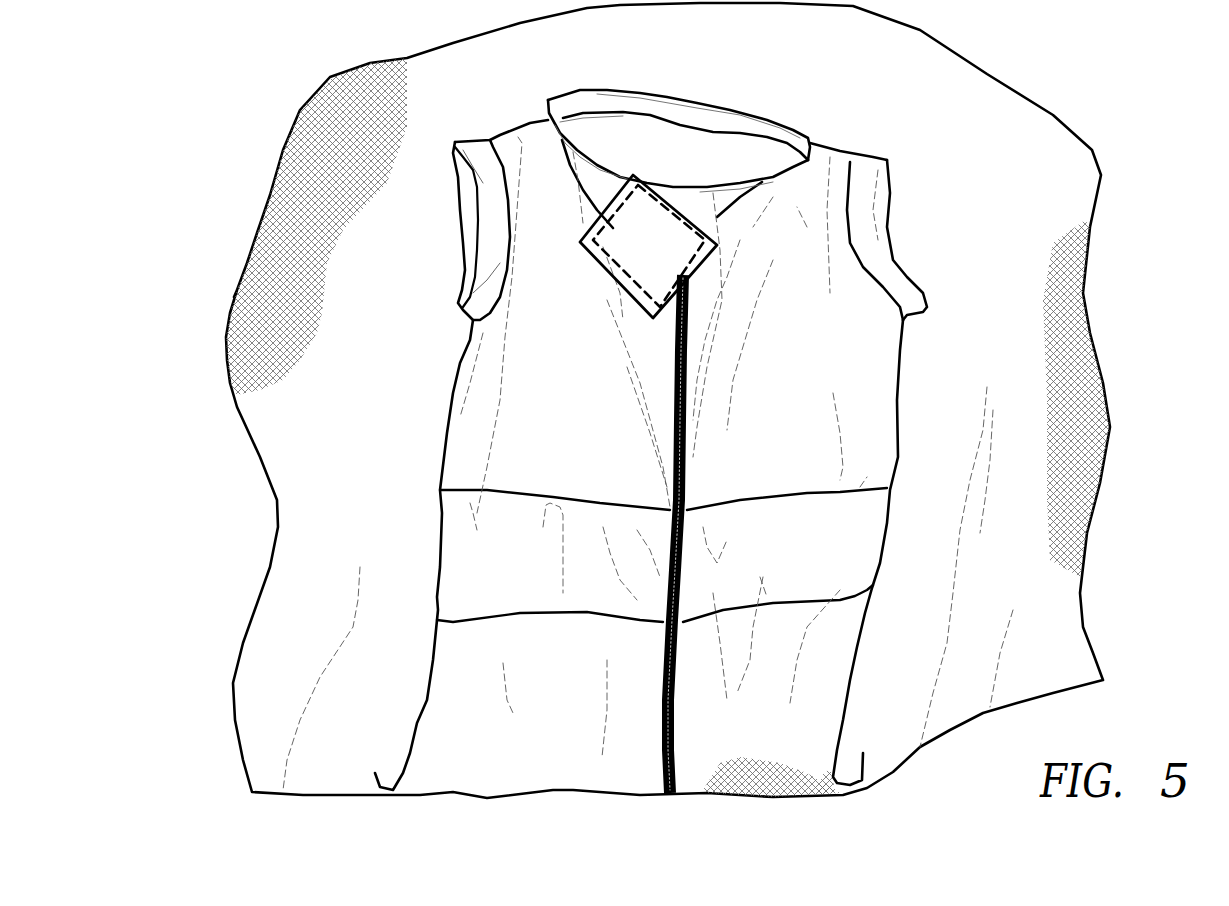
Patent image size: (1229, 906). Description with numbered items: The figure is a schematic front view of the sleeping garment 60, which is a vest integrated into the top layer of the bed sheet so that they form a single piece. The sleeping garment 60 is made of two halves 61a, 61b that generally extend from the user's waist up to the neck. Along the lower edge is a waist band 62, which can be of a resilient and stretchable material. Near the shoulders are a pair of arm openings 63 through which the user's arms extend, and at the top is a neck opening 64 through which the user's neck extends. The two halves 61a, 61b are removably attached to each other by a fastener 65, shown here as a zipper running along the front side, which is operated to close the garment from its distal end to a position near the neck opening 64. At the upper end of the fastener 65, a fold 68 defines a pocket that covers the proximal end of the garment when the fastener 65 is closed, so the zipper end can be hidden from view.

The sleeping garment 60 is at (638, 455).
The first half of the sleeping garment 61a is at (580, 365).
The second half of the sleeping garment 61b is at (840, 370).
The waist band 62 is at (812, 560).
The arm openings 63 is at (660, 230).
The neck opening 64 is at (681, 134).
The fastener 65 is at (633, 534).
The fold 68 is at (666, 253).